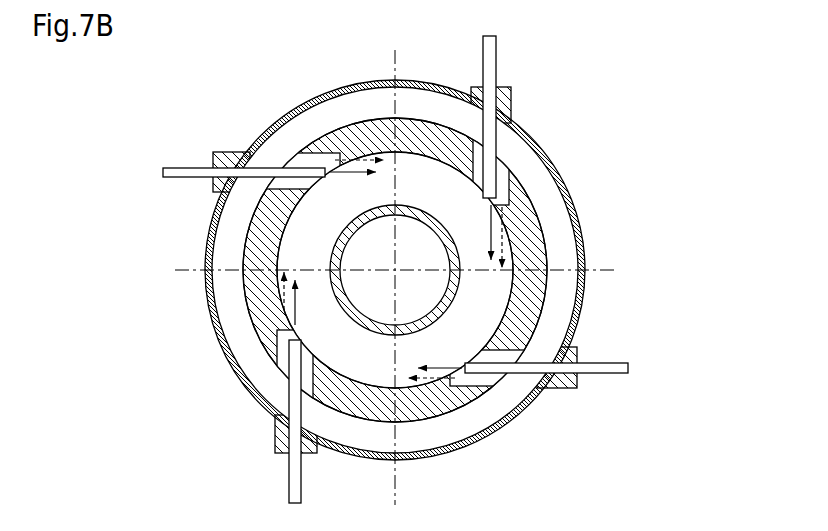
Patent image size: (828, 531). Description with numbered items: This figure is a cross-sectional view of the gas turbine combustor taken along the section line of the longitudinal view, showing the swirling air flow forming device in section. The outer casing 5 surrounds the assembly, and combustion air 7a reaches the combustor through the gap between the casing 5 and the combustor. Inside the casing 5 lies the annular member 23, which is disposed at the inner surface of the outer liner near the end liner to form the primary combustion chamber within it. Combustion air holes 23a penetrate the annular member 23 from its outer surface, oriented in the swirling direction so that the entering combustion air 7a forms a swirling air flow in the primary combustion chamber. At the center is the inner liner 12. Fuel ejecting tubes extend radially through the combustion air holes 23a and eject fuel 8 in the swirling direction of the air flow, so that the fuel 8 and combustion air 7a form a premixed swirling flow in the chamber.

The casing 5 is at (550, 158).
The combustion air 7a is at (352, 170).
The fuel 8 is at (303, 160).
The inner liner 12 is at (362, 222).
The annular member 23 is at (248, 244).
The combustion air holes 23a is at (302, 125).